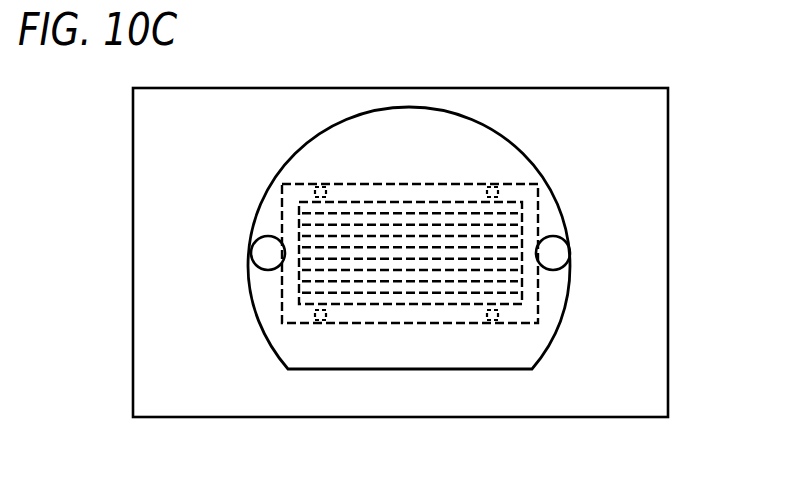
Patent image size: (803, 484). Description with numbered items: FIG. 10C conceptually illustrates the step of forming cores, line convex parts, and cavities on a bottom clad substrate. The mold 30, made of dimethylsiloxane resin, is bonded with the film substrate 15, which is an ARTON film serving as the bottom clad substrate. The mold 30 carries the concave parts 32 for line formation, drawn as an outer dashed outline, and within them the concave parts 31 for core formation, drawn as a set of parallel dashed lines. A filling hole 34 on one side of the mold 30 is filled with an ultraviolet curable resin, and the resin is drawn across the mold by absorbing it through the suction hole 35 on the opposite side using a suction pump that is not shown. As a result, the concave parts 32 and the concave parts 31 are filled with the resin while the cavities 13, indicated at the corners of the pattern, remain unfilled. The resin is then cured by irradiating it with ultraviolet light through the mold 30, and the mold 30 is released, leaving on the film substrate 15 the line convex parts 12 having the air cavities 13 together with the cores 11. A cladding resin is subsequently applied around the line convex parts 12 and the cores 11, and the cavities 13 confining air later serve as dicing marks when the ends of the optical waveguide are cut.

The film substrate 15 is at (593, 100).
The mold 30 is at (552, 212).
The filling hole 34 is at (255, 253).
The suction hole 35 is at (573, 255).
The concave parts for line formation 32 is at (417, 193).
The line convex parts 12 is at (400, 186).
The concave parts for core formation 31 is at (378, 245).
The cores 11 is at (368, 330).
The cavities 13 is at (495, 190).